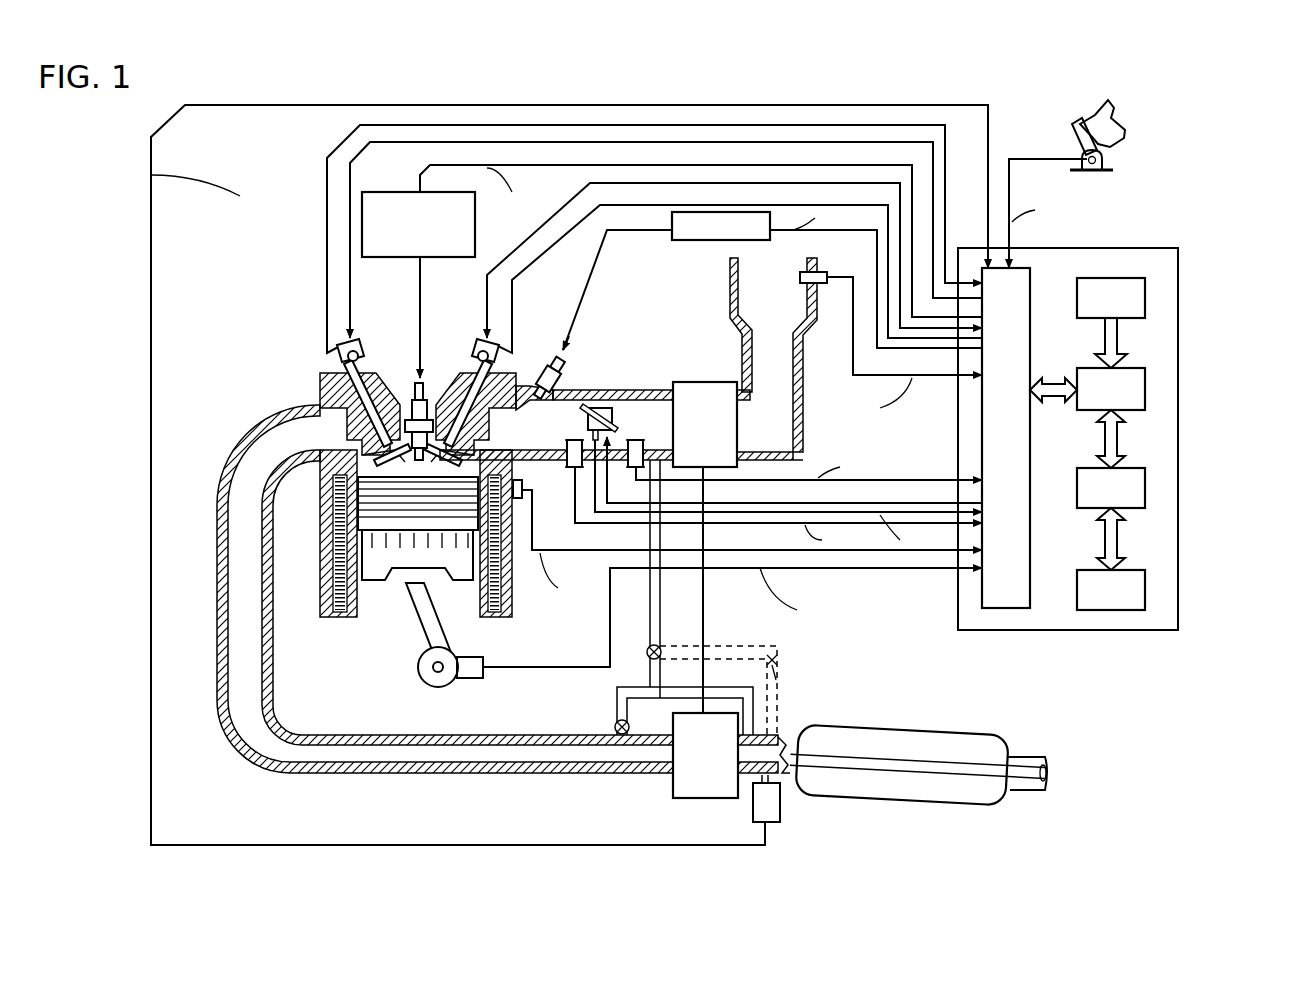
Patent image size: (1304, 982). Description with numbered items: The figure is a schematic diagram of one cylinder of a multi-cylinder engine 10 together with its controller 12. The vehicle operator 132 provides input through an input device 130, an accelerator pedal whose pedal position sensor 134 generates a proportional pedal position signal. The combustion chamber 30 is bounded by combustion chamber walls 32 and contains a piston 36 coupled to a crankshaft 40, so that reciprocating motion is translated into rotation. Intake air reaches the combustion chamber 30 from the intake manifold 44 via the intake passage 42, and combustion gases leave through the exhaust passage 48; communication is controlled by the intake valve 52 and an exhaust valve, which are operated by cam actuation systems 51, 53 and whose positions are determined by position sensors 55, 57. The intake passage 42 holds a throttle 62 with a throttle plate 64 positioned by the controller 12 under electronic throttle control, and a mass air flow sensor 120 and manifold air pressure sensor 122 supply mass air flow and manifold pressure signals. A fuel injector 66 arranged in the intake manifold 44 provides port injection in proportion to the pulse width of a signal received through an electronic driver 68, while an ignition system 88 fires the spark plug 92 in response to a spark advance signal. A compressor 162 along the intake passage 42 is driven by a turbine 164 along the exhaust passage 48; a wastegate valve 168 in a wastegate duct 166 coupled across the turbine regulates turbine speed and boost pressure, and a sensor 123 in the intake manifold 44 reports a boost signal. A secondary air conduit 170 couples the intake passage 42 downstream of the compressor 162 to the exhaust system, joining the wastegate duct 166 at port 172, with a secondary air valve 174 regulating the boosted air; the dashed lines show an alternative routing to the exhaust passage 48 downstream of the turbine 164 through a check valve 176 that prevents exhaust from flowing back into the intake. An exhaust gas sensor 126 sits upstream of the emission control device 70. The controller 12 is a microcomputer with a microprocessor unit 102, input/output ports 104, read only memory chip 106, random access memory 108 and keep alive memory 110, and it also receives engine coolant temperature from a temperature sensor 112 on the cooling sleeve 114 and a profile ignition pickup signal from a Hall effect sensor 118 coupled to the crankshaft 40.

The engine 10 is at (256, 326).
The controller 12 is at (1170, 250).
The combustion chamber 30 is at (325, 578).
The combustion chamber walls 32 is at (362, 605).
The piston 36 is at (420, 585).
The crankshaft 40 is at (428, 690).
The intake passage 42 is at (790, 359).
The intake manifold 44 is at (595, 432).
The exhaust passage 48 is at (497, 562).
The cam actuation system 51 is at (480, 340).
The intake valve 52 is at (460, 447).
The cam actuation system 53 is at (356, 340).
The position sensor 55 is at (495, 358).
The position sensor 57 is at (342, 358).
The throttle 62 is at (598, 407).
The throttle plate 64 is at (613, 422).
The fuel injector 66 is at (540, 368).
The electronic driver 68 is at (676, 240).
The emission control device 70 is at (960, 737).
The ignition system 88 is at (373, 192).
The spark plug 92 is at (422, 380).
The microprocessor unit 102 is at (1148, 387).
The input/output ports 104 is at (1033, 277).
The read only memory chip 106 is at (1148, 297).
The random access memory 108 is at (1148, 485).
The keep alive memory 110 is at (1148, 585).
The temperature sensor 112 is at (522, 498).
The cooling sleeve 114 is at (505, 600).
The Hall effect sensor 118 is at (470, 680).
The mass air flow sensor 120 is at (815, 285).
The manifold air pressure sensor 122 is at (565, 462).
The sensor 123 is at (633, 467).
The exhaust gas sensor 126 is at (783, 798).
The input device 130 is at (1077, 130).
The vehicle operator 132 is at (1120, 123).
The pedal position sensor 134 is at (1105, 160).
The compressor 162 is at (705, 424).
The turbine 164 is at (705, 755).
The wastegate duct 166 is at (616, 688).
The wastegate valve 168 is at (615, 722).
The secondary air conduit 170 is at (663, 601).
The port 172 is at (656, 690).
The secondary air valve 174 is at (649, 650).
The check valve 176 is at (776, 658).